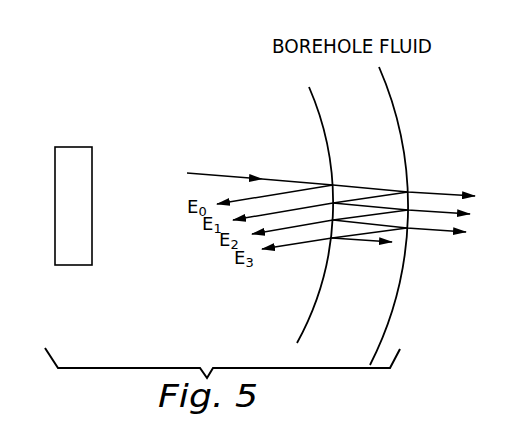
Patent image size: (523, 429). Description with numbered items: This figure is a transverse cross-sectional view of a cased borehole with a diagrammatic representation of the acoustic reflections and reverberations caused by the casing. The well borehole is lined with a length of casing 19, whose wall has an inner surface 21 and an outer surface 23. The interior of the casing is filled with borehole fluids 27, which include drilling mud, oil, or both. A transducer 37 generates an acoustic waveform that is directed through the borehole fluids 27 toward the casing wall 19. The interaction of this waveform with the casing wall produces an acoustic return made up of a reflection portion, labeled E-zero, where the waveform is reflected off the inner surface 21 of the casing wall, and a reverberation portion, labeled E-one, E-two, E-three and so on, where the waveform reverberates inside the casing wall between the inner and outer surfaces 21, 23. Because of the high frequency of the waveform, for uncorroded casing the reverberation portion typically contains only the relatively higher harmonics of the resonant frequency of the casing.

The casing 19 is at (377, 152).
The inner surface of the casing wall 21 is at (312, 108).
The outer surface of the casing wall 23 is at (398, 109).
The borehole fluids 27 is at (185, 143).
The transducer 37 is at (72, 147).